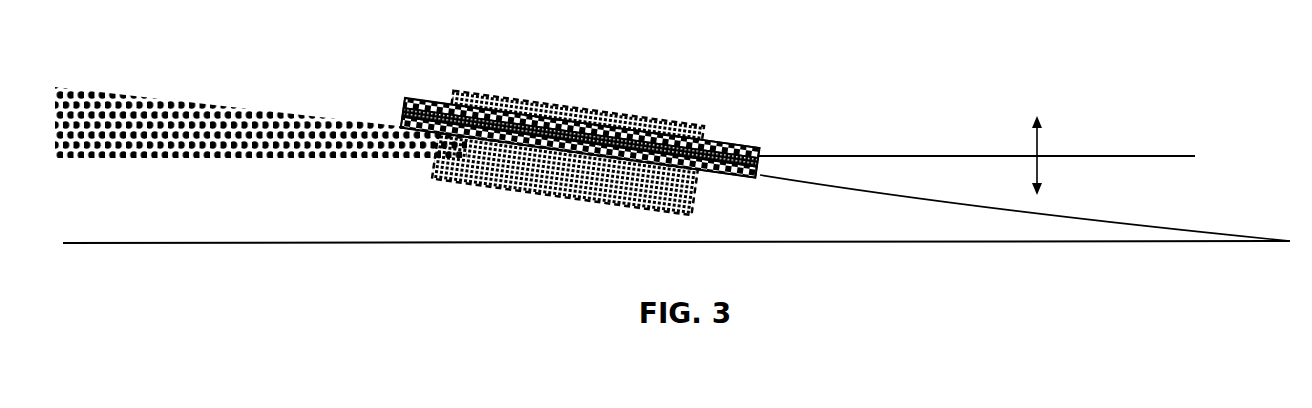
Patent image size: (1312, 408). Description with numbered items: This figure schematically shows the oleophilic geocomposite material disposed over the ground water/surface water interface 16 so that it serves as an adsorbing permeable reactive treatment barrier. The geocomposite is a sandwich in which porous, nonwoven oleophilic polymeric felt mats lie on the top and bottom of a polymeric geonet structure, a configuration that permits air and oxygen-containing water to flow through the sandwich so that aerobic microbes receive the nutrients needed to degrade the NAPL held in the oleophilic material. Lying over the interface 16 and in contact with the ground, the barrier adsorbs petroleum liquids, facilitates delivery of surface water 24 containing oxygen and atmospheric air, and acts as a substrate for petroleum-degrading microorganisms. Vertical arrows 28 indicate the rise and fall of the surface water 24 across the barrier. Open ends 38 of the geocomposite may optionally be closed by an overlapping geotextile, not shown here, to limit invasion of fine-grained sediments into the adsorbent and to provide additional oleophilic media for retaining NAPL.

The ground water/surface water interface 16 is at (586, 150).
The surface water 24 is at (922, 153).
The vertical arrows 28 is at (1038, 143).
The open ends 38 is at (398, 120).